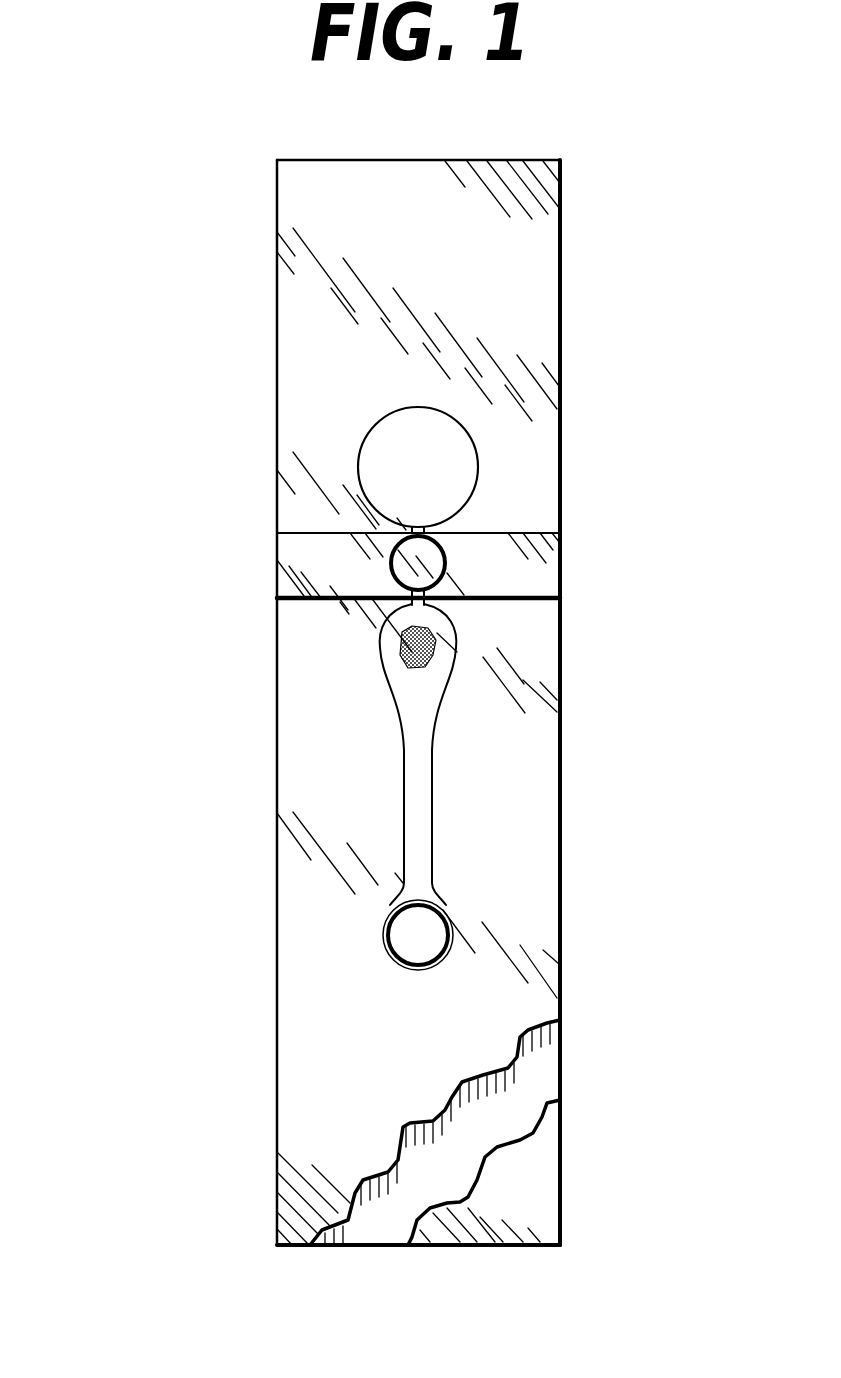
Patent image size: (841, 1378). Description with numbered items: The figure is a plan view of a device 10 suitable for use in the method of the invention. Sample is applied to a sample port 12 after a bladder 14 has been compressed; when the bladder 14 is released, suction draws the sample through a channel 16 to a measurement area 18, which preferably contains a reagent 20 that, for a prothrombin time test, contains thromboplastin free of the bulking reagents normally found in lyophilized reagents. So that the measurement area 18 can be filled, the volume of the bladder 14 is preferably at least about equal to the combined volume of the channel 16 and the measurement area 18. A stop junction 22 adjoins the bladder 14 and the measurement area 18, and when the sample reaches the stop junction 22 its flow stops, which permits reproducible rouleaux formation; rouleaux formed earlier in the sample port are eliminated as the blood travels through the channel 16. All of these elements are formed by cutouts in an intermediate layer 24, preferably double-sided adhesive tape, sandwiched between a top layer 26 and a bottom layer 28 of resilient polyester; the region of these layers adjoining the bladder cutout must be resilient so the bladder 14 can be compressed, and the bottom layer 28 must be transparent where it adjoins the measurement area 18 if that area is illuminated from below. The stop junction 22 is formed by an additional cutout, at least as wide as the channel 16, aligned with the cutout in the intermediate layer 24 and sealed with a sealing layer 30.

The device 10 is at (160, 270).
The sample port 12 is at (415, 935).
The bladder 14 is at (477, 474).
The channel 16 is at (405, 783).
The measurement area 18 is at (456, 638).
The reagent 20 is at (407, 652).
The stop junction 22 is at (445, 562).
The intermediate layer 24 is at (540, 1082).
The top layer 26 is at (308, 1144).
The bottom layer 28 is at (540, 1208).
The sealing layer 30 is at (303, 560).